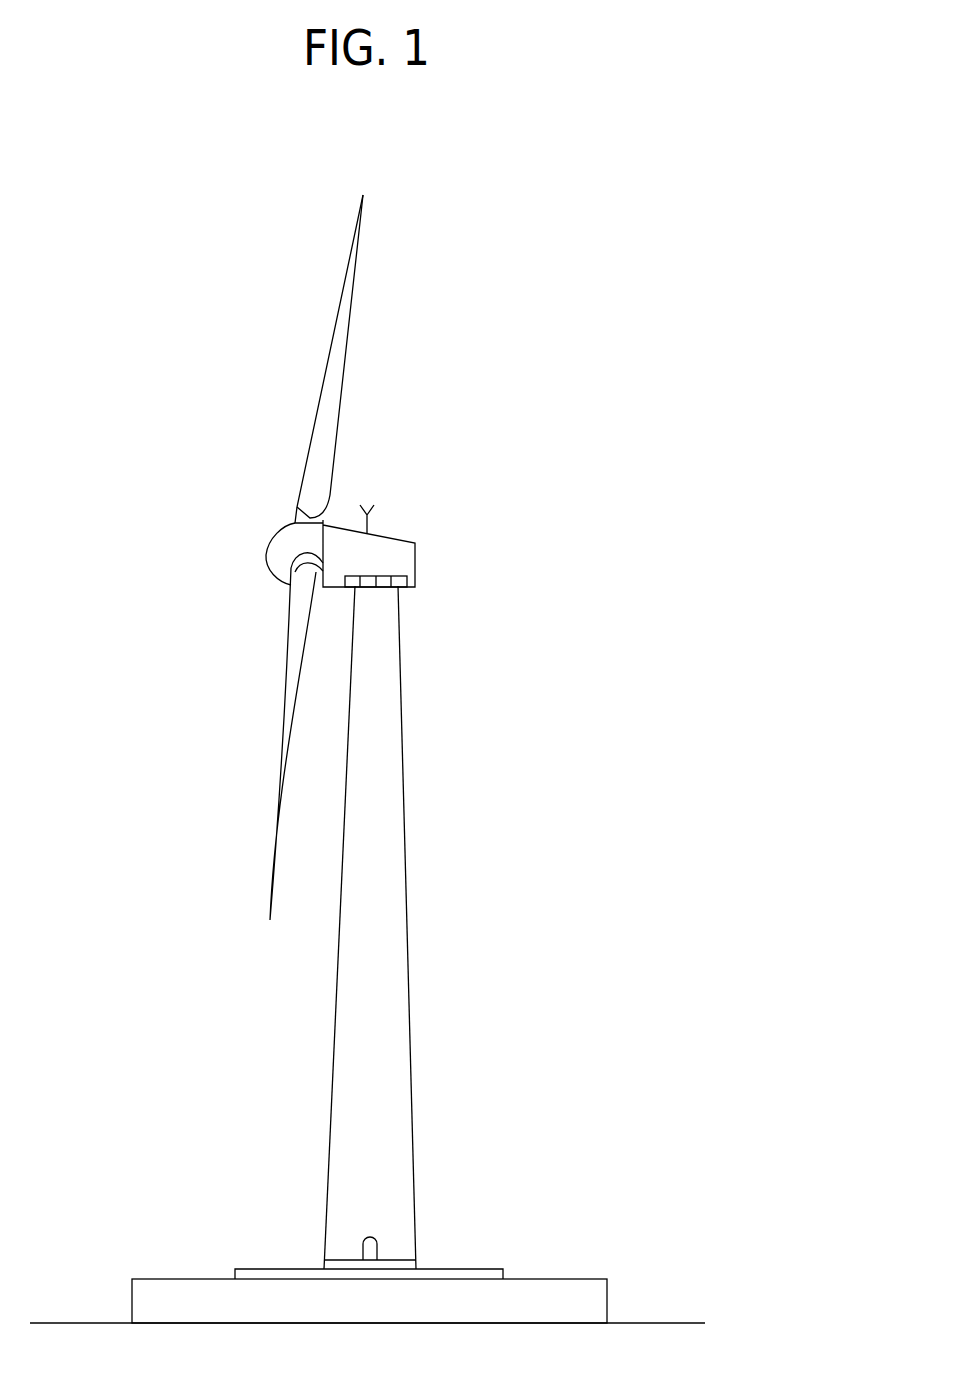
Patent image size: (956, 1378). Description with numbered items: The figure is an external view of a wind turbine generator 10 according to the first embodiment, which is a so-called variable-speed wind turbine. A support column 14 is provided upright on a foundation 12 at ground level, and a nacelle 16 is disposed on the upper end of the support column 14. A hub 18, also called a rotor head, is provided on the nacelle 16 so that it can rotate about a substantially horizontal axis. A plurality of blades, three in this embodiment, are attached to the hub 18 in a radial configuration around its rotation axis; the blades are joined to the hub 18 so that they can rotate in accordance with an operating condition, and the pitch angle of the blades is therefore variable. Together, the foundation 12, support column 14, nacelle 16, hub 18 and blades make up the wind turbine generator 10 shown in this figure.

The wind turbine generator 10 is at (528, 490).
The foundation 12 is at (570, 1278).
The support column 14 is at (404, 772).
The nacelle 16 is at (385, 538).
The hub 18 is at (265, 550).